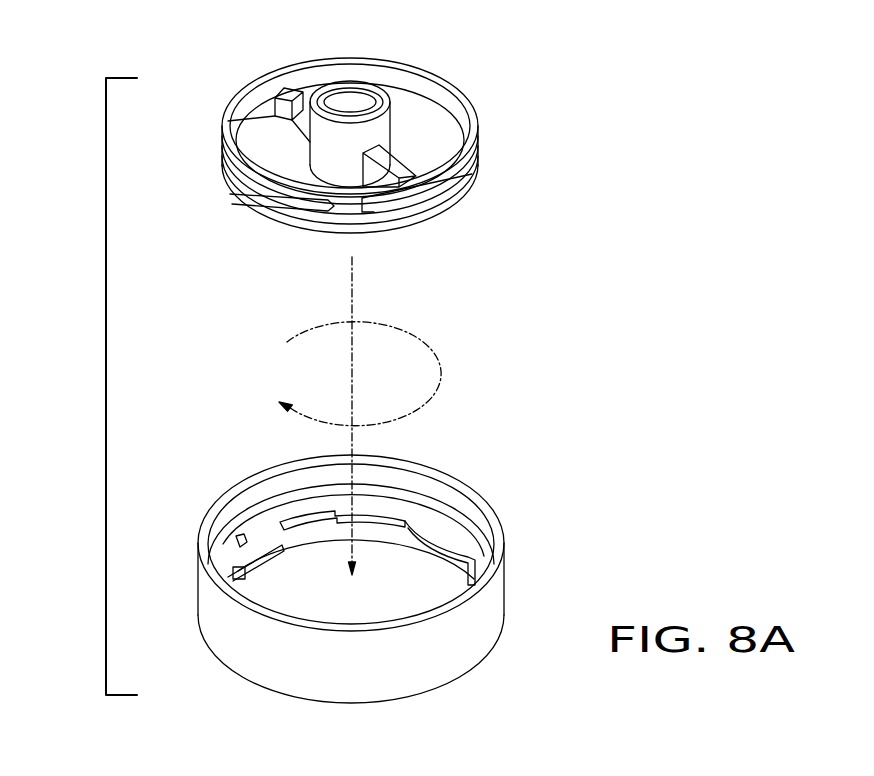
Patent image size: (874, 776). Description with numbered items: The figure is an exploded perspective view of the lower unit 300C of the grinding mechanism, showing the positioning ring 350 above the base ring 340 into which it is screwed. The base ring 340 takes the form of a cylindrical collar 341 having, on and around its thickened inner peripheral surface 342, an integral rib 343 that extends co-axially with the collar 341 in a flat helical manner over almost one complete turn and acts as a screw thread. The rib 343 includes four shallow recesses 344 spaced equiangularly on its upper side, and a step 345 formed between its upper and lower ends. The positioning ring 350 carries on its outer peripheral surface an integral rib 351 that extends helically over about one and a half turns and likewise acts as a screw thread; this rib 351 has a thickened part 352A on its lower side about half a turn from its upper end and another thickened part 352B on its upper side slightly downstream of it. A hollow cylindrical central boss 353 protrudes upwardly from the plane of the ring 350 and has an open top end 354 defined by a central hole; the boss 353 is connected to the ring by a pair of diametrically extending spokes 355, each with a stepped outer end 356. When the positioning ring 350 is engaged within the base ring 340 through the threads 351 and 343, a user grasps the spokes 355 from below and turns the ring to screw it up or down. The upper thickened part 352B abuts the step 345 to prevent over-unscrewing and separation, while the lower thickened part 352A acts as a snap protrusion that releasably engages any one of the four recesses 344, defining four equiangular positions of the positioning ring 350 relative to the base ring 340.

The lower unit 300C is at (105, 354).
The positioning ring 350 is at (541, 174).
The rib 351 is at (443, 190).
The thickened part 352A is at (415, 208).
The thickened part 352B is at (341, 204).
The central boss 353 is at (322, 152).
The open top end 354 is at (347, 95).
The spokes 355 is at (294, 105).
The stepped outer end 356 is at (281, 99).
The base ring 340 is at (597, 474).
The cylindrical collar 341 is at (470, 490).
The inner peripheral surface 342 is at (243, 536).
The rib 343 is at (472, 553).
The recesses 344 is at (375, 515).
The step 345 is at (275, 534).